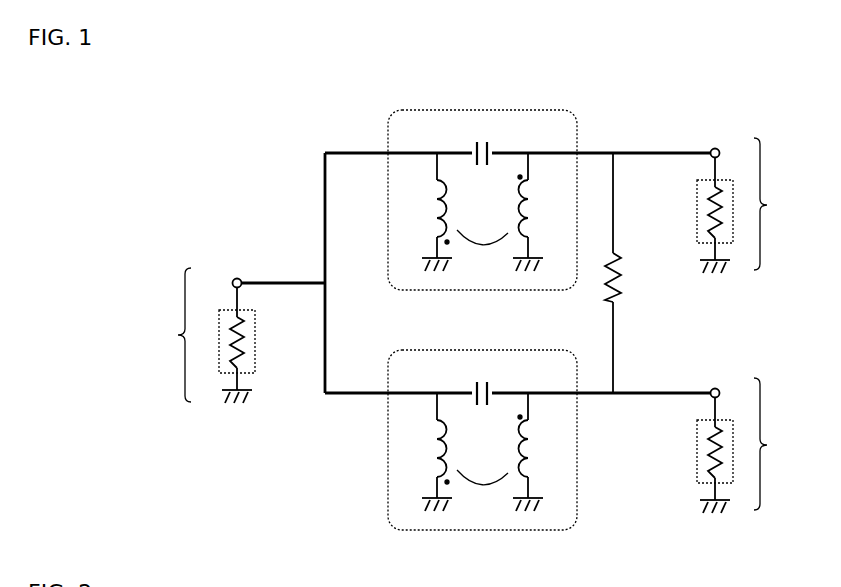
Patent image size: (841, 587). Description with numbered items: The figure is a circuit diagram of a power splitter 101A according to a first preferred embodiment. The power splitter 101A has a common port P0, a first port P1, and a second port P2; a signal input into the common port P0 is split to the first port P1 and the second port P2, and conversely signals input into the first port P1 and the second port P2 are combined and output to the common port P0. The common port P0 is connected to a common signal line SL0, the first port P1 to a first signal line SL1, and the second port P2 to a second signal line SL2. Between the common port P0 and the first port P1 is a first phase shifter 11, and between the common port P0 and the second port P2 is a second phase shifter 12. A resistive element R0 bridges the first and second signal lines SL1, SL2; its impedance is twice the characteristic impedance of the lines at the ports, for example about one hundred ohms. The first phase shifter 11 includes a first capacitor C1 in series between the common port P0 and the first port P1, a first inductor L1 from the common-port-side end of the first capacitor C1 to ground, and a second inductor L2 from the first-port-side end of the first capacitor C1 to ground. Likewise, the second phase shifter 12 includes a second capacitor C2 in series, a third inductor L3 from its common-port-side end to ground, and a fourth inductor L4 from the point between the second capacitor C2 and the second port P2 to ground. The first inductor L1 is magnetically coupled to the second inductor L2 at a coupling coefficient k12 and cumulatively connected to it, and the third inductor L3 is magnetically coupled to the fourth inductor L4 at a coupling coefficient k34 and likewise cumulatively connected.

The power splitter 101A is at (233, 85).
The first phase shifter 11 is at (480, 110).
The second phase shifter 12 is at (492, 531).
The common signal line SL0 is at (280, 282).
The first signal line SL1 is at (365, 152).
The second signal line SL2 is at (365, 392).
The first capacitor C1 is at (484, 141).
The second capacitor C2 is at (484, 381).
The first inductor L1 is at (428, 212).
The second inductor L2 is at (535, 212).
The third inductor L3 is at (428, 452).
The fourth inductor L4 is at (535, 452).
The coupling coefficient k12 is at (482, 252).
The coupling coefficient k34 is at (482, 492).
The resistive element R0 is at (632, 273).
The common port P0 is at (196, 335).
The first port P1 is at (753, 205).
The second port P2 is at (753, 445).